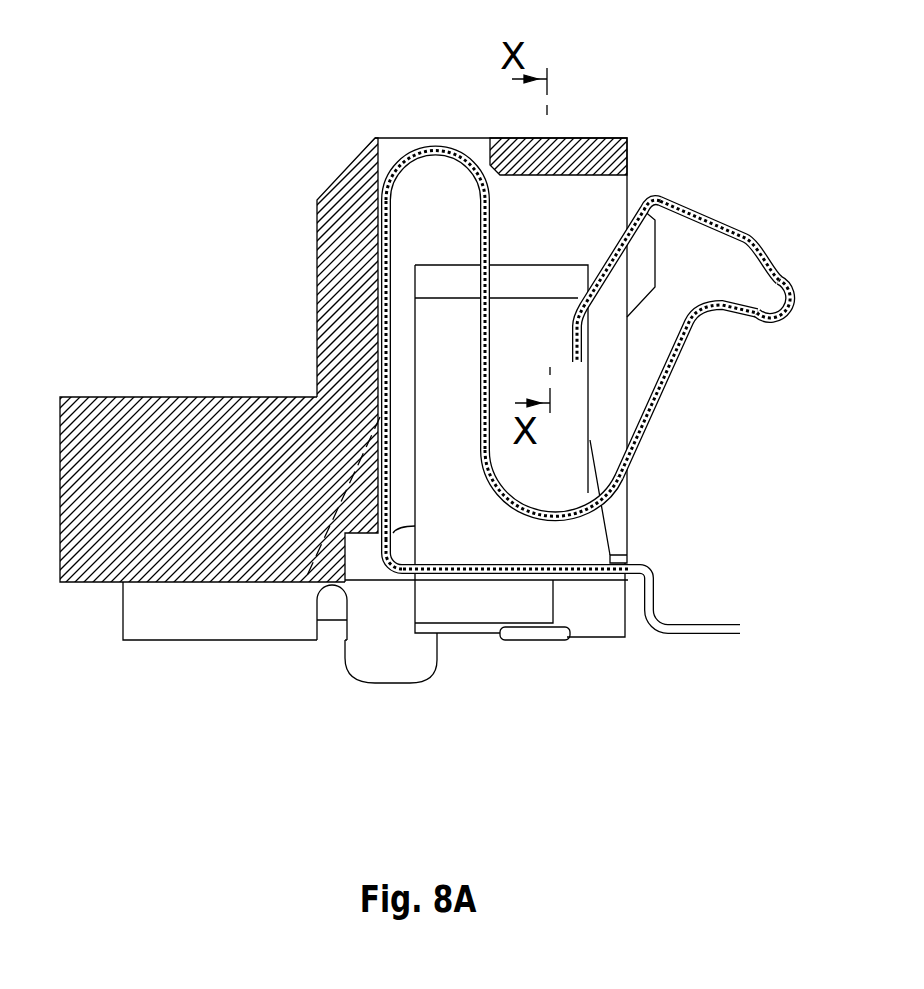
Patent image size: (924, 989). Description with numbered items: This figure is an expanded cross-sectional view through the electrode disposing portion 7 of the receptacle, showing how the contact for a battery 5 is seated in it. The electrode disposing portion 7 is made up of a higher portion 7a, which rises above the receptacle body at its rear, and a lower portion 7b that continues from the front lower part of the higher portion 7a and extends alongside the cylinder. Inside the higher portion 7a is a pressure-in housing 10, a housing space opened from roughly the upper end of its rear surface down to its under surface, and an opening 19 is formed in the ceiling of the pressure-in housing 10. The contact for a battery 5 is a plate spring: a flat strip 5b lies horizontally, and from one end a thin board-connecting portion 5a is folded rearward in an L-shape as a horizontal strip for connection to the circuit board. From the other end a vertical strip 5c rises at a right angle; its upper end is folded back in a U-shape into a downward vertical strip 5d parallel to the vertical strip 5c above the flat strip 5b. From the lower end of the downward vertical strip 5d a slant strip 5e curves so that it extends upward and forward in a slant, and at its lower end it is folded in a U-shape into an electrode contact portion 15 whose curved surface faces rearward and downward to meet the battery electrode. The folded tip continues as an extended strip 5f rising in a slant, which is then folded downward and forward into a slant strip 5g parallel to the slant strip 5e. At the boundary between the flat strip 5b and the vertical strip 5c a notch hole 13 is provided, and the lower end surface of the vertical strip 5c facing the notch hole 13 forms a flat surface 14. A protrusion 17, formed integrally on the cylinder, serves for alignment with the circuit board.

The contact for a battery 5 is at (540, 427).
The board-connecting portion 5a is at (727, 620).
The flat strip 5b is at (582, 575).
The vertical strip 5c is at (308, 582).
The downward vertical strip 5d is at (480, 355).
The slant strip 5e is at (688, 358).
The extended strip 5f is at (727, 240).
The slant strip 5g is at (610, 266).
The electrode disposing portion 7 is at (462, 300).
The higher portion 7a is at (337, 313).
The lower portion 7b is at (223, 430).
The pressure-in housing 10 is at (588, 217).
The notch hole 13 is at (397, 583).
The flat surface 14 is at (350, 608).
The electrode contact portion 15 is at (793, 310).
The protrusion 17 is at (427, 663).
The opening 19 is at (400, 147).